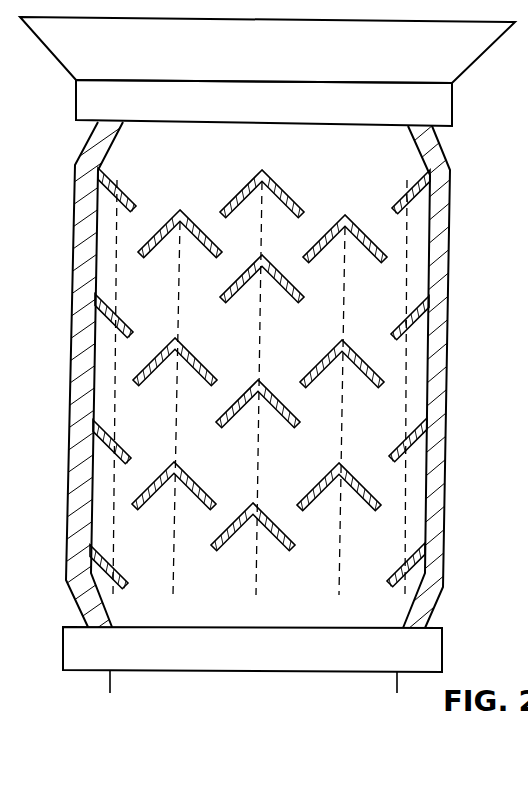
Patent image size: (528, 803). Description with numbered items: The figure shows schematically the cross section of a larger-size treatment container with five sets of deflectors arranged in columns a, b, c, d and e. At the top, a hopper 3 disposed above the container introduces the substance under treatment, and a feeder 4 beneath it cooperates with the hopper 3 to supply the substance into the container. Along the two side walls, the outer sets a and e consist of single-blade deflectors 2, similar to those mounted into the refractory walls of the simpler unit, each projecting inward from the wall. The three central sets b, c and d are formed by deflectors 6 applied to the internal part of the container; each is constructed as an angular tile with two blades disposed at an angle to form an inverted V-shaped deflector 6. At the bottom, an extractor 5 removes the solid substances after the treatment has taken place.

The deflectors 2 is at (412, 200).
The hopper 3 is at (460, 60).
The feeder 4 is at (442, 113).
The extractor 5 is at (427, 642).
The deflectors 6 is at (295, 295).